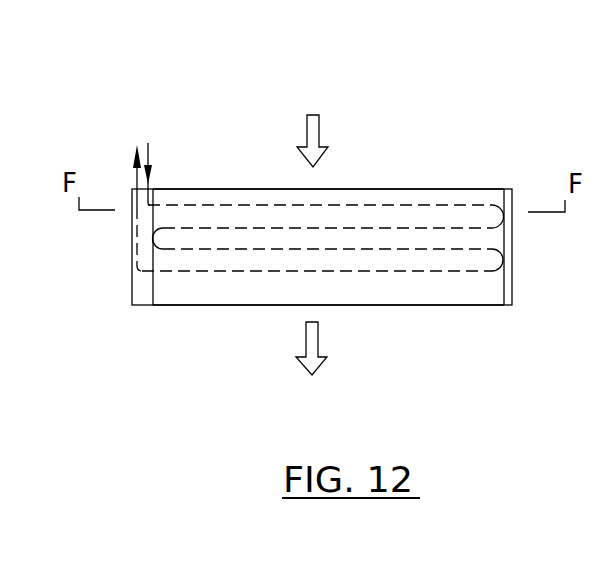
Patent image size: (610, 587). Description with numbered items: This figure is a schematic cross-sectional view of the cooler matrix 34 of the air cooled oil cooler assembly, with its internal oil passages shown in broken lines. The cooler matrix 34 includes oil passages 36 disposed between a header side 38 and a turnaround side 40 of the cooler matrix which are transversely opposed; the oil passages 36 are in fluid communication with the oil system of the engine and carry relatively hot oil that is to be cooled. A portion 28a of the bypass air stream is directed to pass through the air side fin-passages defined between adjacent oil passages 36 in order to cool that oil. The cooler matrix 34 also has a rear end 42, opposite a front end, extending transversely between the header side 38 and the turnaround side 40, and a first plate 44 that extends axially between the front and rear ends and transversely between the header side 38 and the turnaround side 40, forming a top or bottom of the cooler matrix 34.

The portion of the bypass air stream 28a is at (321, 125).
The cooler matrix 34 is at (463, 170).
The oil passages 36 is at (202, 204).
The header side 38 is at (132, 250).
The turnaround side 40 is at (512, 241).
The rear end 42 is at (440, 305).
The first plate 44 is at (397, 190).